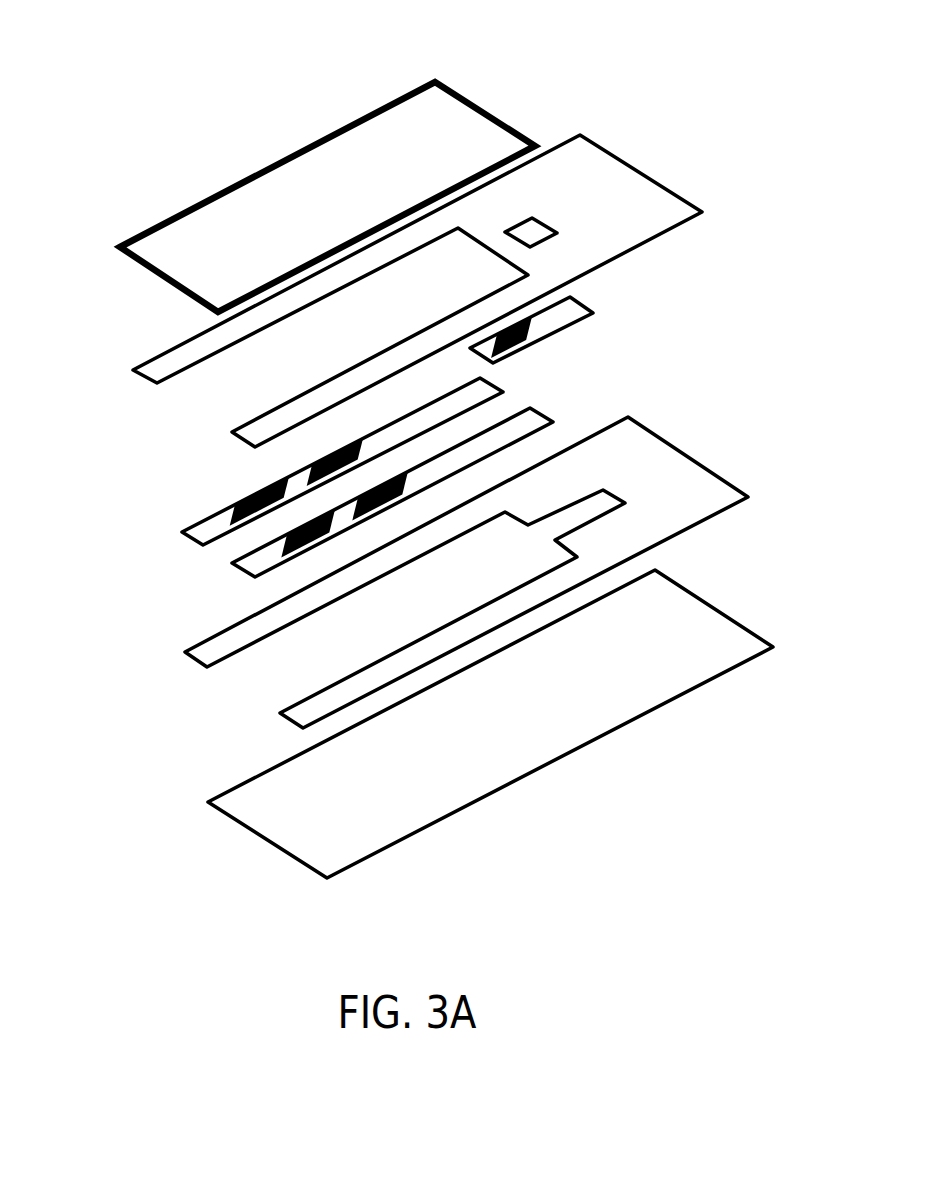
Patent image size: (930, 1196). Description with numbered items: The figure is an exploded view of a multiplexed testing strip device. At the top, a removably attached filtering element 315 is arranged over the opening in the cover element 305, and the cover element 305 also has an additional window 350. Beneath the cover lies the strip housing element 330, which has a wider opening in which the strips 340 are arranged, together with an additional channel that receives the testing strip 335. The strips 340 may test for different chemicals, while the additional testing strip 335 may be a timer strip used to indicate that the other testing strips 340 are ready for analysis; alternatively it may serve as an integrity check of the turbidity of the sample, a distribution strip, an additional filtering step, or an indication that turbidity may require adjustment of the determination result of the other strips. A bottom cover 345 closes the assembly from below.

The cover element 305 is at (622, 190).
The removably attached filtering element 315 is at (396, 150).
The strip housing element 330 is at (688, 490).
The testing strip 335 is at (587, 302).
The strips 340 is at (176, 527).
The bottom cover 345 is at (635, 675).
The additional window 350 is at (527, 227).